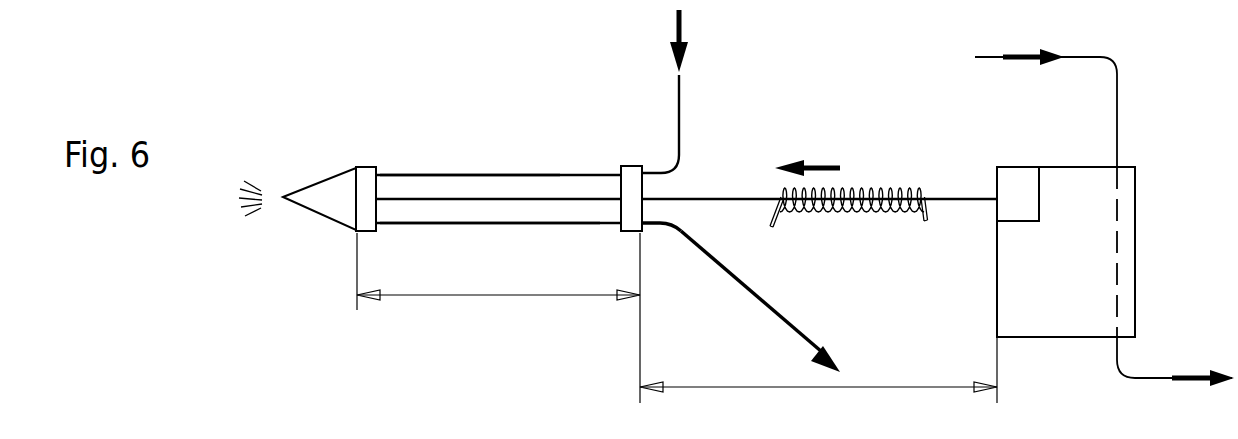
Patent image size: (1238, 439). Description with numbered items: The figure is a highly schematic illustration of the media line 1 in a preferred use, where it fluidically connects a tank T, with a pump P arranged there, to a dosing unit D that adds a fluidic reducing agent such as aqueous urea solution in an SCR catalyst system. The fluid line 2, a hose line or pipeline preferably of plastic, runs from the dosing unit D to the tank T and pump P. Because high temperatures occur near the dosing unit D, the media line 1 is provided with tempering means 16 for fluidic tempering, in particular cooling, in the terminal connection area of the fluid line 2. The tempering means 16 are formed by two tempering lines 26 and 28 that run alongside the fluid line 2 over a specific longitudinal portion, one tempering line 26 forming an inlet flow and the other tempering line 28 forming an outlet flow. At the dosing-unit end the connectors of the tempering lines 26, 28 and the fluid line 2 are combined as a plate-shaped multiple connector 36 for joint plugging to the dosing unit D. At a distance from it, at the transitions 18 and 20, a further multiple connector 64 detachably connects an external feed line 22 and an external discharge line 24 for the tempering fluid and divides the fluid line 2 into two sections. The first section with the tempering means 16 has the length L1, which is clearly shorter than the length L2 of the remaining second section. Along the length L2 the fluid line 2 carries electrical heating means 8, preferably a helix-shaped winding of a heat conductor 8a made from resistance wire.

The media line 1 is at (747, 120).
The fluid line 2 is at (497, 199).
The electrical heating means 8 is at (878, 175).
The heat conductor 8a is at (901, 206).
The tempering means 16 is at (392, 164).
The transition 18 is at (629, 154).
The transition 20 is at (652, 245).
The external feed line 22 is at (684, 110).
The external discharge line 24 is at (742, 282).
The tempering line 26 is at (433, 174).
The tempering line 28 is at (545, 223).
The multiple connector 36 is at (358, 158).
The multiple connector 64 is at (612, 155).
The dosing unit D is at (304, 178).
The first section length L1 is at (498, 318).
The second section length L2 is at (818, 370).
The pump P is at (1018, 194).
The tank T is at (1066, 252).